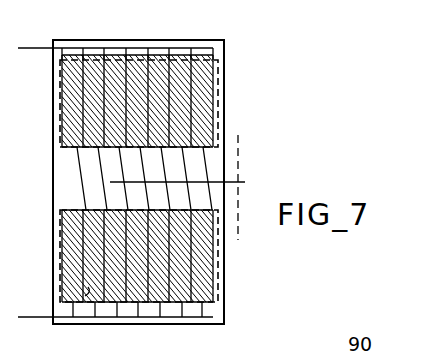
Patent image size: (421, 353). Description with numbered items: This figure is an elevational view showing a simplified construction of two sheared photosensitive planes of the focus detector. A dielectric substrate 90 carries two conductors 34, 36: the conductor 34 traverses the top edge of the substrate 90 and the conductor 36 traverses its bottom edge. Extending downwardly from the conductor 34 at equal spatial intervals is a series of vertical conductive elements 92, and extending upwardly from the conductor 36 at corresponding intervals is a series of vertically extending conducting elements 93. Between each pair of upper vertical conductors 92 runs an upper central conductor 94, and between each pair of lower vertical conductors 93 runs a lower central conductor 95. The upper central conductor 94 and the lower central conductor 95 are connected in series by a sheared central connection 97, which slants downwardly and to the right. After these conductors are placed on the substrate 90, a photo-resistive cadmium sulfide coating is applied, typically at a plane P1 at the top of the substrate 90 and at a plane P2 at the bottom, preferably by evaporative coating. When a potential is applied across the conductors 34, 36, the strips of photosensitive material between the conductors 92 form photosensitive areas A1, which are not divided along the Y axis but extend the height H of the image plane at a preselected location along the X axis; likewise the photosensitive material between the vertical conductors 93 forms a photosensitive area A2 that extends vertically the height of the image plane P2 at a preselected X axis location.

The dielectric substrate 90 is at (224, 78).
The conductor 34 is at (30, 49).
The conductor 36 is at (24, 313).
The vertical conductive elements 92 is at (82, 57).
The upper central conductor 94 is at (77, 77).
The photosensitive areas A1 is at (68, 105).
The photosensitive area A2 is at (77, 245).
The plane P1 is at (212, 62).
The plane P2 is at (205, 276).
The sheared central connection 97 is at (80, 175).
The vertically extending conducting elements 93 is at (80, 326).
The lower central conductor 95 is at (108, 331).
The height dimension H is at (172, 40).
The X axis X is at (184, 175).
The Y axis Y is at (245, 187).